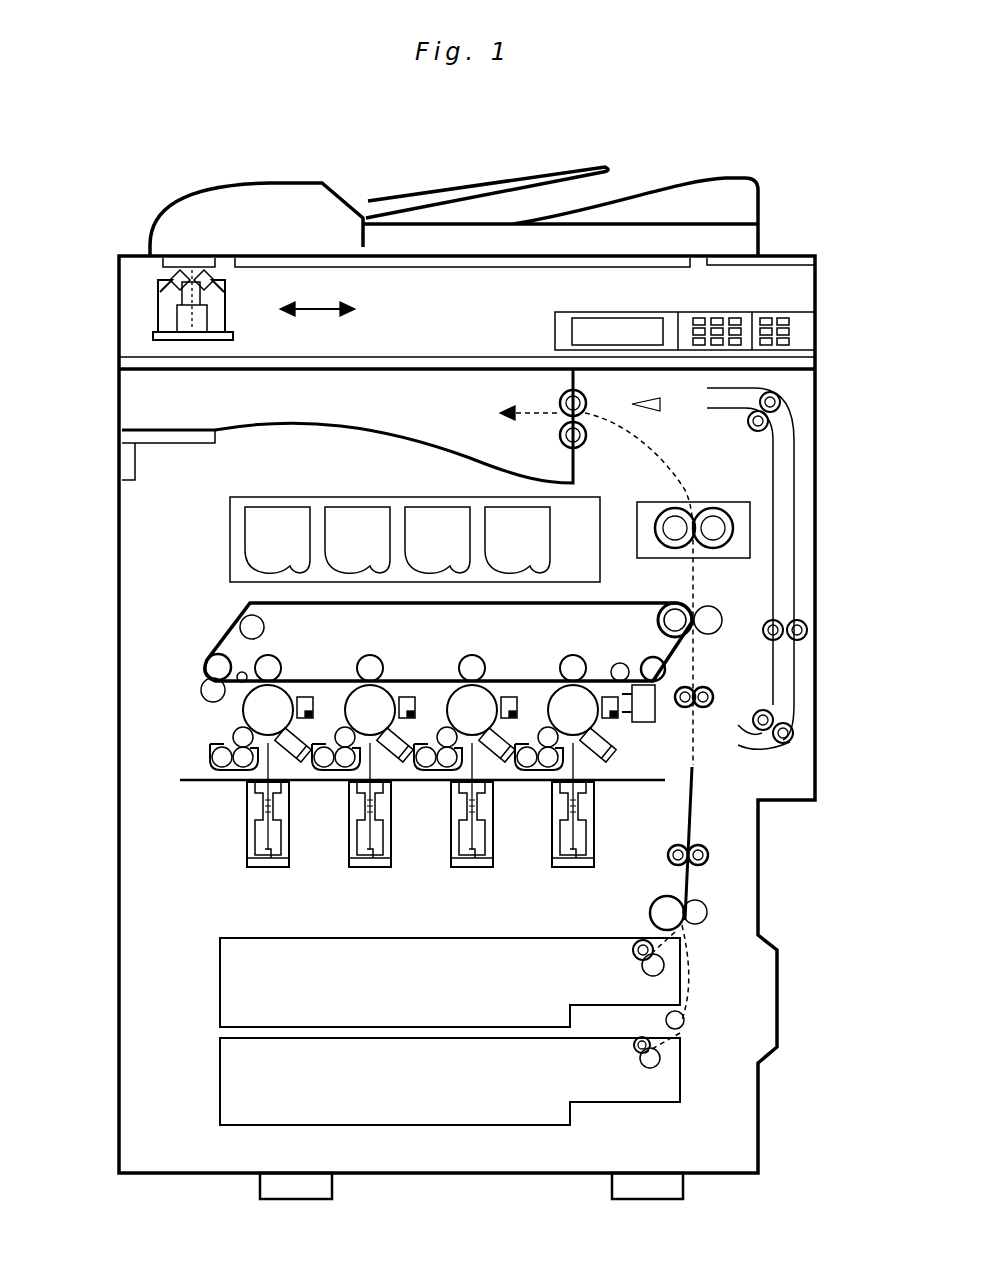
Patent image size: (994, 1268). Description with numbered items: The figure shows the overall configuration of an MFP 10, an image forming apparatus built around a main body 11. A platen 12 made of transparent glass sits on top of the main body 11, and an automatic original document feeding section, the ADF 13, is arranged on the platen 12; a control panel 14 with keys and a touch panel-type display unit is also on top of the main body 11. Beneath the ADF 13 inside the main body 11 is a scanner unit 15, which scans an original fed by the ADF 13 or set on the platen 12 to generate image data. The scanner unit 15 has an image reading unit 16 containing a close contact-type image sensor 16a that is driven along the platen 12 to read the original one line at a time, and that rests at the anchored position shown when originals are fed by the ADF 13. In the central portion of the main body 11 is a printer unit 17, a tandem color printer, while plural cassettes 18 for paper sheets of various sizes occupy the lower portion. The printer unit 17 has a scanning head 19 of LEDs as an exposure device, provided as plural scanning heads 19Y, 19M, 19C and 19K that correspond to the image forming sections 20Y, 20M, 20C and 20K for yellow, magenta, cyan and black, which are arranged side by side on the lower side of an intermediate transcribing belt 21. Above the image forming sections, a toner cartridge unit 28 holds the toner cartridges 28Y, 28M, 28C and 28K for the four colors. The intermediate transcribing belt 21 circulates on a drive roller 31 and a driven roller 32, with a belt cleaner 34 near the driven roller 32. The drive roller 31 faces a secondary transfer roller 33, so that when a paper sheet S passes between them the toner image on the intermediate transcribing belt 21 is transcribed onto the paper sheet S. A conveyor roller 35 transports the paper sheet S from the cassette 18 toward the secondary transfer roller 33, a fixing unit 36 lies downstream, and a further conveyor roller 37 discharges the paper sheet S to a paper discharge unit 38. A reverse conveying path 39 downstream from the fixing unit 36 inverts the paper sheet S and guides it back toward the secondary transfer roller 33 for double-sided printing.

The MFP 10 is at (682, 156).
The main body 11 is at (119, 1022).
The platen 12 is at (472, 257).
The automatic original document feeding section (ADF) 13 is at (202, 214).
The control panel 14 is at (814, 328).
The scanner unit 15 is at (397, 298).
The image reading unit 16 is at (153, 321).
The close contact-type image sensor 16a is at (185, 342).
The printer unit 17 is at (140, 787).
The cassettes 18 is at (480, 953).
The scanning head 19 is at (372, 837).
The scanning head 19Y is at (247, 840).
The scanning head 19M is at (349, 840).
The scanning head 19C is at (450, 840).
The scanning head 19K is at (552, 840).
The image forming section 20Y is at (240, 718).
The image forming section 20M is at (337, 715).
The image forming section 20C is at (439, 715).
The image forming section 20K is at (541, 715).
The intermediate transcribing belt 21 is at (472, 612).
The toner cartridge unit 28 is at (388, 539).
The toner cartridge 28Y is at (277, 540).
The toner cartridge 28M is at (357, 540).
The toner cartridge 28C is at (437, 540).
The toner cartridge 28K is at (517, 540).
The drive roller 31 is at (672, 608).
The driven roller 32 is at (213, 660).
The secondary transfer roller 33 is at (708, 607).
The belt cleaner 34 is at (205, 690).
The conveyor roller 35 is at (692, 850).
The fixing unit 36 is at (700, 502).
The conveyor roller 37 is at (586, 437).
The paper discharge unit 38 is at (420, 440).
The reverse conveying path 39 is at (795, 507).
The paper sheet S is at (693, 883).